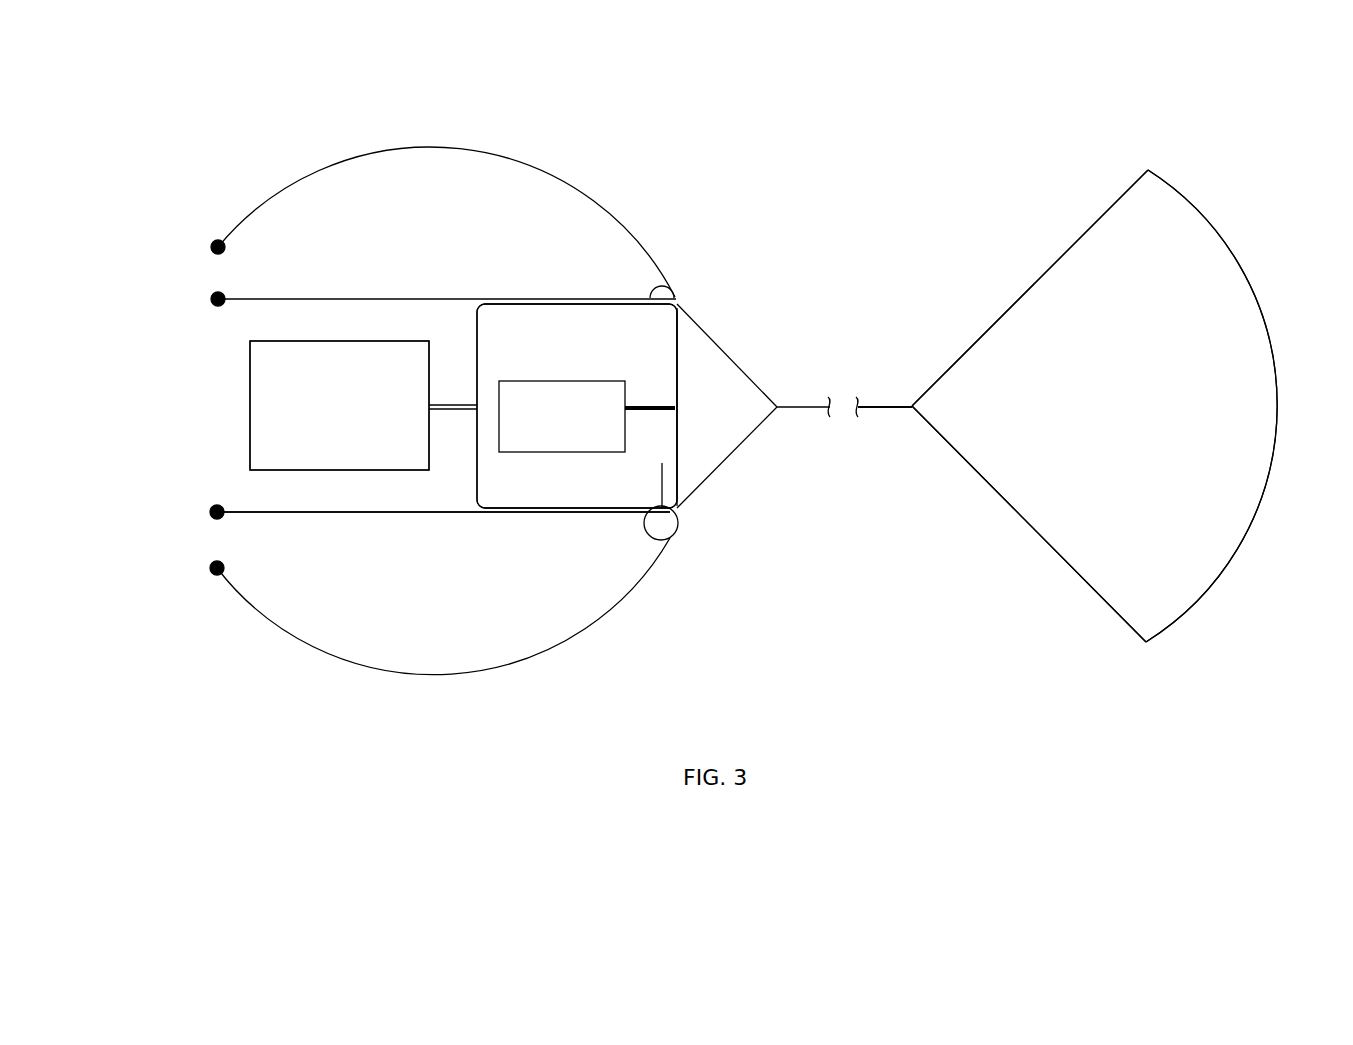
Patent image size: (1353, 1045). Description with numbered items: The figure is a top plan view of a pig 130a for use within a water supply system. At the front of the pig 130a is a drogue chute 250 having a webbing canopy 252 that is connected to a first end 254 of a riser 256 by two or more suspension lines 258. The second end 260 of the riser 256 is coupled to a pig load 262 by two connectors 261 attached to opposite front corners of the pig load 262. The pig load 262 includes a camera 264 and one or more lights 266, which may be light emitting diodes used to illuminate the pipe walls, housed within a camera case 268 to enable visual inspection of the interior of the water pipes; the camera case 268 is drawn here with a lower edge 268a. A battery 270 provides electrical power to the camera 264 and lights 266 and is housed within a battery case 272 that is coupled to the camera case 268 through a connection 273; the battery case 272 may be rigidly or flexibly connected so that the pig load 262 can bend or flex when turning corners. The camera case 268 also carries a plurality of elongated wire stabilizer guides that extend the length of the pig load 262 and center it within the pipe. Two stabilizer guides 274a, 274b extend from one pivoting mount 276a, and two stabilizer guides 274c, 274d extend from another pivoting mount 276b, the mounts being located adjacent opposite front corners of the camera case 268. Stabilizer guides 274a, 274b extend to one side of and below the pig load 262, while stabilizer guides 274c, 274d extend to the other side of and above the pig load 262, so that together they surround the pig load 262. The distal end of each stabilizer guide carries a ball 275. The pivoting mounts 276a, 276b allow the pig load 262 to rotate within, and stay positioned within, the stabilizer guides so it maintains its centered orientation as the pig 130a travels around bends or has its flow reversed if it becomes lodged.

The pig 130a is at (893, 140).
The drogue chute 250 is at (1138, 656).
The webbing canopy 252 is at (1215, 581).
The first end of riser 254 is at (910, 404).
The riser 256 is at (889, 409).
The suspension lines 258 is at (1062, 258).
The second end of riser 260 is at (783, 406).
The connectors 261 is at (720, 352).
The pig load 262 is at (691, 258).
The camera 264 is at (534, 307).
The lights 266 is at (563, 453).
The camera case 268 is at (677, 386).
The connector lower line 268a is at (500, 515).
The battery 270 is at (265, 427).
The battery case 272 is at (250, 356).
The battery connector 273 is at (453, 404).
The stabilizer guide 274a is at (510, 153).
The stabilizer guide 274b is at (333, 299).
The stabilizer guide 274c is at (510, 666).
The stabilizer guide 274d is at (327, 513).
The ball 275 is at (210, 250).
The pivoting mount 276a is at (676, 297).
The pivoting mount 276b is at (678, 525).